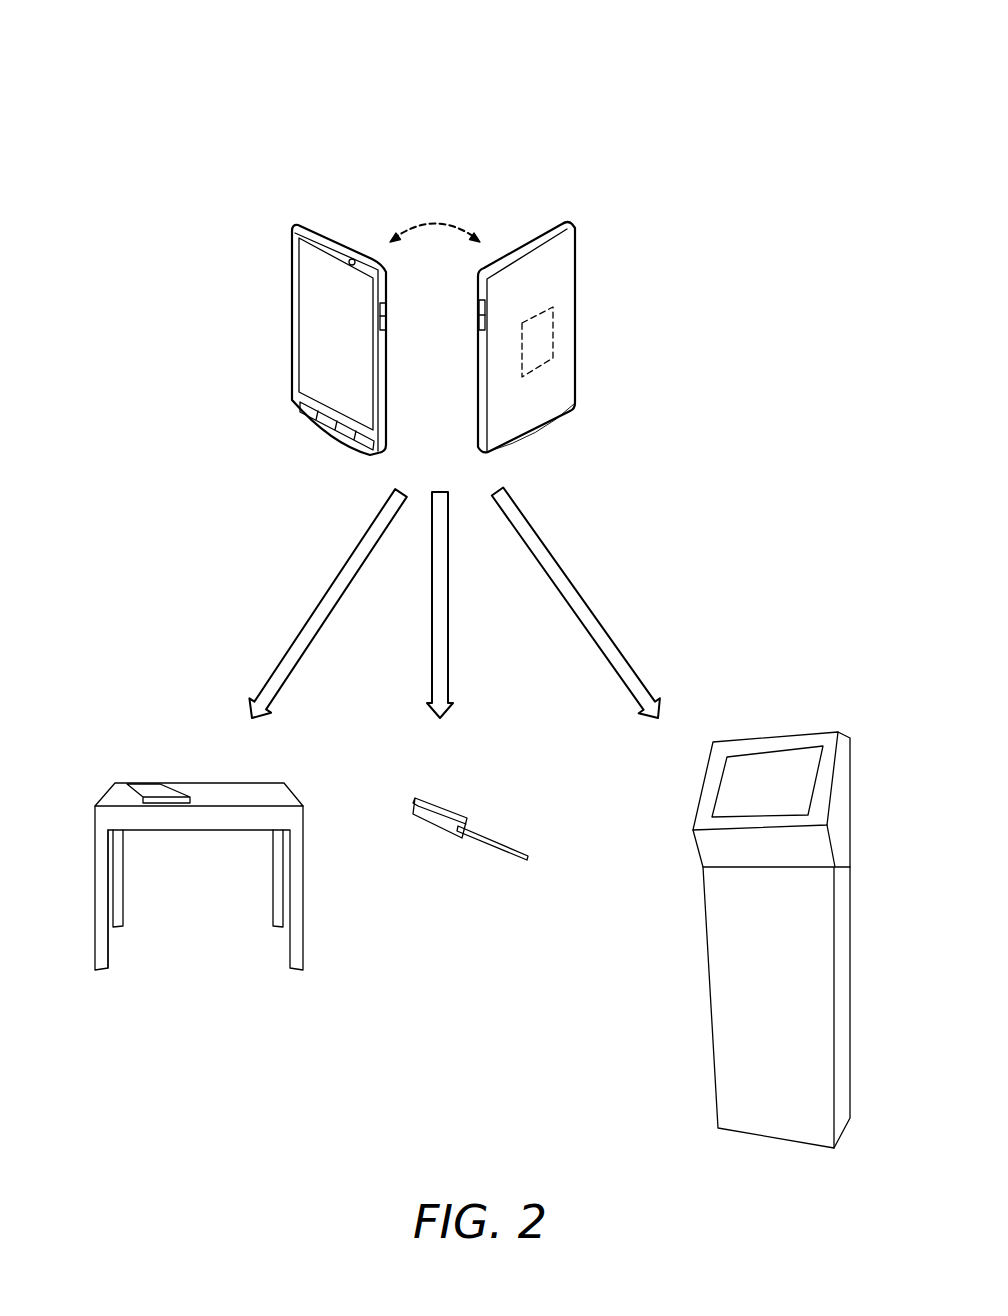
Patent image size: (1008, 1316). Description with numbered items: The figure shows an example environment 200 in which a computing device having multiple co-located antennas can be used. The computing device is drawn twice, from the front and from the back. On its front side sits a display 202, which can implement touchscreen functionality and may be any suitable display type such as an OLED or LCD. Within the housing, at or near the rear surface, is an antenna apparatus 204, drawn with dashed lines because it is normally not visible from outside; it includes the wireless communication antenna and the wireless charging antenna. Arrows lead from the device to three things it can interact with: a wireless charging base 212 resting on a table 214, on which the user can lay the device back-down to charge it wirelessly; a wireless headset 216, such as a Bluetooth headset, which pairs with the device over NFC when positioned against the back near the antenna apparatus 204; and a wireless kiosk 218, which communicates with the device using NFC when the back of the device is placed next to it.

The environment 200 is at (741, 66).
The display 202 is at (308, 323).
The antenna apparatus 204 is at (554, 330).
The wireless charging base 212 is at (142, 782).
The table 214 is at (262, 782).
The wireless headset 216 is at (450, 810).
The wireless kiosk 218 is at (753, 738).